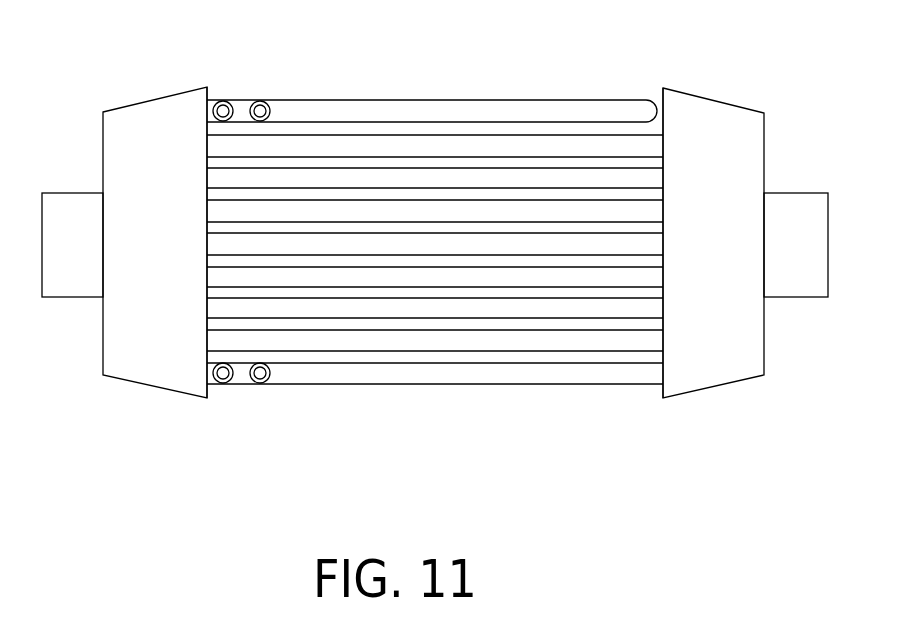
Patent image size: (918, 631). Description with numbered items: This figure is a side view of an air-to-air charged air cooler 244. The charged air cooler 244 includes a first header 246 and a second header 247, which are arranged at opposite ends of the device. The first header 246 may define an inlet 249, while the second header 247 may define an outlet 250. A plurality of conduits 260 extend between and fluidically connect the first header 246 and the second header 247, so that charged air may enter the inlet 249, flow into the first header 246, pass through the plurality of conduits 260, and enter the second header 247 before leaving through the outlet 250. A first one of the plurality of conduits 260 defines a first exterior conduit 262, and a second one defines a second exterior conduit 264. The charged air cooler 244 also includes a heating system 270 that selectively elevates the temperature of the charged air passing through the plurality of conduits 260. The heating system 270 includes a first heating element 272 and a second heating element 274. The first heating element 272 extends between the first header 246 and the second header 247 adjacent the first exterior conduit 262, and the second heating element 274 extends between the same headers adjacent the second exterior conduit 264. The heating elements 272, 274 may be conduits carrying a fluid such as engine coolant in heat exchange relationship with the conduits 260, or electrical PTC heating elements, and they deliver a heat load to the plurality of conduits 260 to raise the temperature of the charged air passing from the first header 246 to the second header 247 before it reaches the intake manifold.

The air-to-air charged air cooler 244 is at (432, 272).
The first header 246 is at (722, 388).
The second header 247 is at (153, 250).
The inlet 249 is at (800, 290).
The outlet 250 is at (72, 193).
The plurality of conduits 260 is at (402, 347).
The first exterior conduit 262 is at (328, 122).
The second exterior conduit 264 is at (295, 364).
The heating system 270 is at (236, 410).
The first heating element 272 is at (432, 75).
The second heating element 274 is at (498, 387).